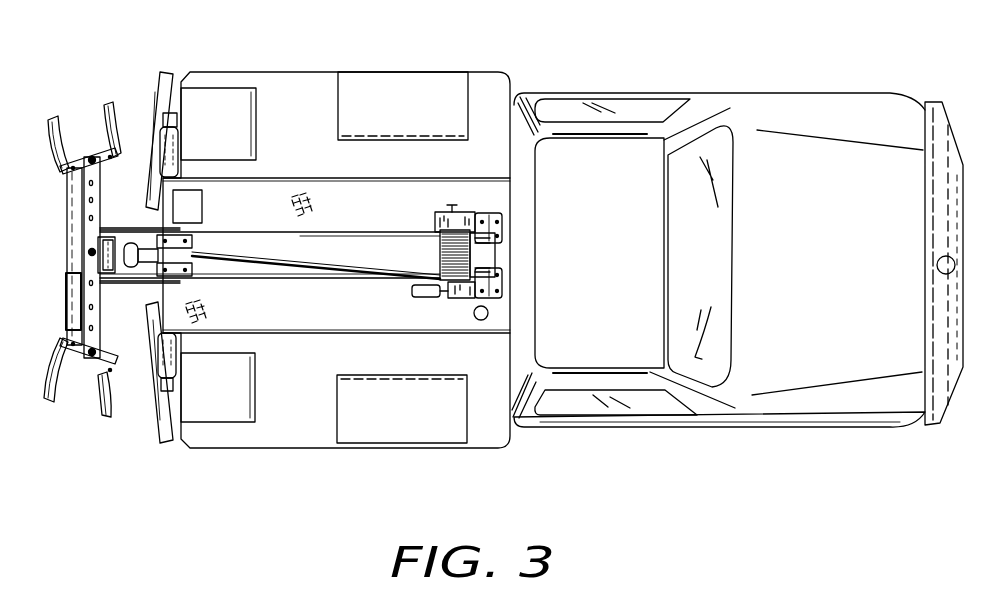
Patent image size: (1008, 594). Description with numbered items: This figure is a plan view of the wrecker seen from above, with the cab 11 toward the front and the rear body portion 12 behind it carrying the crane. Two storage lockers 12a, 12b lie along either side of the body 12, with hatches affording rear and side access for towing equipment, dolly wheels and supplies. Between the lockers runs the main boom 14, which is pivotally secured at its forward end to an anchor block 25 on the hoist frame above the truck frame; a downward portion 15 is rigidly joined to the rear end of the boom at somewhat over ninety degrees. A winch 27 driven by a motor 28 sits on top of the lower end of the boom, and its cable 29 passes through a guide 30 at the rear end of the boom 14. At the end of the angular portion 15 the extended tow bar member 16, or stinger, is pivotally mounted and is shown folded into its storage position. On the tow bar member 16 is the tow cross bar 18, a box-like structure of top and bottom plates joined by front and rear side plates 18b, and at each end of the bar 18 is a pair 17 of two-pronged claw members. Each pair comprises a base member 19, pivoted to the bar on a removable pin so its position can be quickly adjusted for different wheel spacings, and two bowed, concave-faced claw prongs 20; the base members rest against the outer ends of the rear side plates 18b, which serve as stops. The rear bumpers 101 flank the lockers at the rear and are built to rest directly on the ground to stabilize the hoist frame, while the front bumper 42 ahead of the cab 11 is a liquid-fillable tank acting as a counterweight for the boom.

The cab 11 is at (822, 281).
The rear body portion 12 is at (343, 166).
The storage locker 12a is at (318, 72).
The storage locker 12b is at (306, 448).
The main boom 14 is at (335, 231).
The downward boom portion 15 is at (116, 284).
The tow bar member 16 is at (100, 232).
The pair of claw members 17 is at (88, 138).
The tow cross bar 18 is at (67, 313).
The rear side plate 18b is at (72, 295).
The claw base member 19 is at (99, 160).
The claw prong 20 is at (44, 122).
The anchor block 25 is at (502, 214).
The winch 27 is at (440, 258).
The motor 28 is at (432, 297).
The cable 29 is at (318, 265).
The guide 30 is at (192, 246).
The front bumper 42 is at (933, 102).
The rear bumper 101 is at (160, 72).